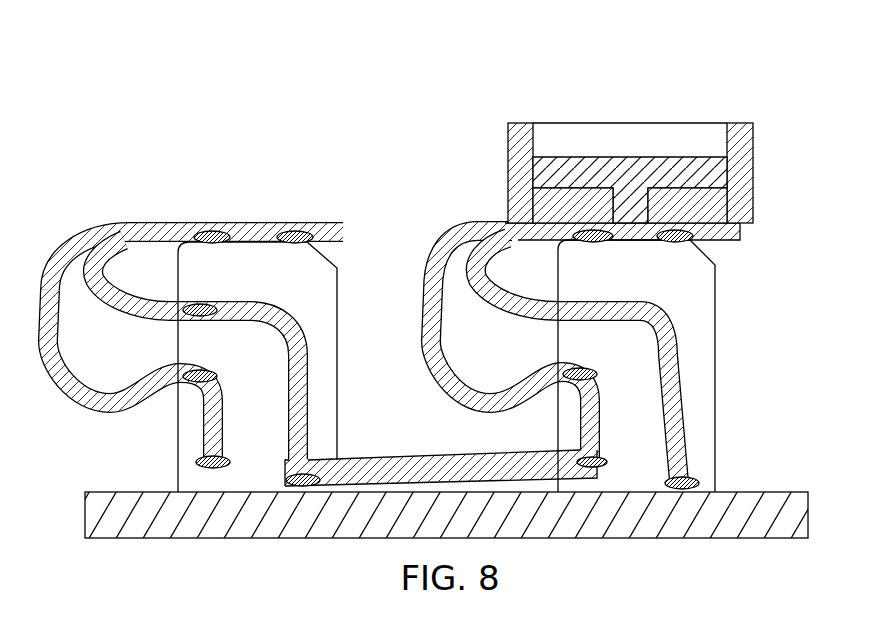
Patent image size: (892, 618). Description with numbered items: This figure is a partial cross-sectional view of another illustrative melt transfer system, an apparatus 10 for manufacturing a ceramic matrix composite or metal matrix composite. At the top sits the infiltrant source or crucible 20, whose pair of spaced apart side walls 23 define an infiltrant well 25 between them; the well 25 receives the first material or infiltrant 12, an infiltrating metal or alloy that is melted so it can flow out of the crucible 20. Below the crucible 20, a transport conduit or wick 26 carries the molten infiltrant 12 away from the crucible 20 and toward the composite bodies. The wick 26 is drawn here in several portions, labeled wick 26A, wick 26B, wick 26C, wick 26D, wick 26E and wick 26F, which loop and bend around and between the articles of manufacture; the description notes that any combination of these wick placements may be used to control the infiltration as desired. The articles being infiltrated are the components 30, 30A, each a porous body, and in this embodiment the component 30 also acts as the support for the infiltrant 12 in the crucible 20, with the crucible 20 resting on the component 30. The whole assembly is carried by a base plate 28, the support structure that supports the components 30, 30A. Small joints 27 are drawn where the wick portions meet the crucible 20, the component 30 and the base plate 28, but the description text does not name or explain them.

The apparatus 10 is at (434, 278).
The infiltrant 12 is at (610, 157).
The crucible 20 is at (589, 138).
The side walls 23 is at (522, 123).
The infiltrant well 25 is at (658, 140).
The wick 26 is at (421, 330).
The wick 26A is at (421, 323).
The wick 26B is at (500, 300).
The wick 26C is at (123, 298).
The wick 26D is at (83, 398).
The wick 26E is at (174, 222).
The wick 26F is at (430, 453).
The solder joint 27 is at (288, 230).
The base plate 28 is at (791, 492).
The component 30 is at (716, 353).
The component 30A is at (337, 415).